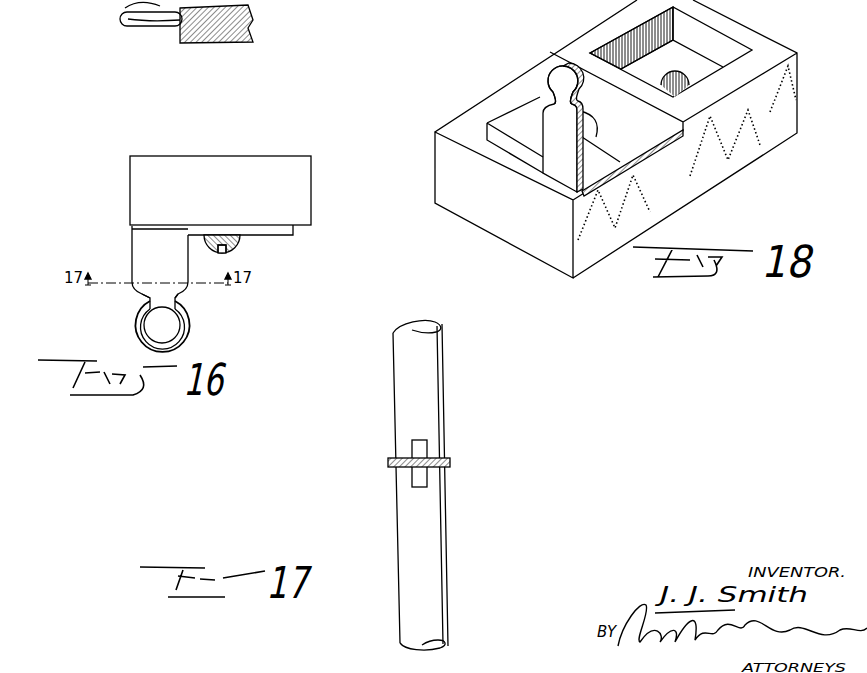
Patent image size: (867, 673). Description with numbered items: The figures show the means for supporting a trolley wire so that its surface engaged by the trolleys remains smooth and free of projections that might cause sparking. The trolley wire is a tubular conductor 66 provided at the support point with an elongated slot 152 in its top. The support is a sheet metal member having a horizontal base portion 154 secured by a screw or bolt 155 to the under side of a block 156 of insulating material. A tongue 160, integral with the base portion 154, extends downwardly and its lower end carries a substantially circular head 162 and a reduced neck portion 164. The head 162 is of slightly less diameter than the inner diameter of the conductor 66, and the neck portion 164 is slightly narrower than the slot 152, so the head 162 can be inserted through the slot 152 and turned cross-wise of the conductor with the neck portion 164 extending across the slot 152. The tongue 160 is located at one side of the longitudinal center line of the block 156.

In FIG. 16, the tubular conductor 66 is at (138, 336).
In FIG. 17, the tubular conductor 66 is at (441, 374).
In FIG. 16, the elongated slot 152 is at (143, 300).
In FIG. 17, the elongated slot 152 is at (428, 447).
In FIG. 16, the horizontal base portion 154 is at (267, 237).
In FIG. 18, the horizontal base portion 154 is at (518, 118).
In FIG. 16, the screw or bolt 155 is at (240, 251).
In FIG. 18, the screw or bolt 155 is at (598, 140).
In FIG. 16, the block of insulating material 156 is at (140, 182).
In FIG. 18, the block of insulating material 156 is at (770, 106).
In FIG. 16, the tongue 160 is at (160, 253).
In FIG. 17, the tongue 160 is at (449, 472).
In FIG. 18, the tongue 160 is at (563, 148).
In FIG. 16, the circular head 162 is at (166, 332).
In FIG. 18, the circular head 162 is at (562, 77).
In FIG. 16, the reduced neck portion 164 is at (164, 302).
In FIG. 18, the reduced neck portion 164 is at (557, 98).